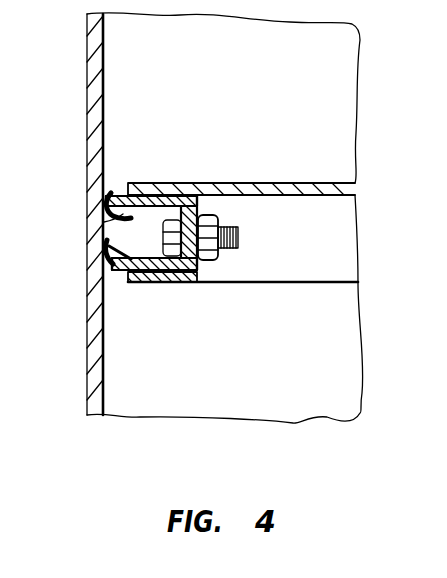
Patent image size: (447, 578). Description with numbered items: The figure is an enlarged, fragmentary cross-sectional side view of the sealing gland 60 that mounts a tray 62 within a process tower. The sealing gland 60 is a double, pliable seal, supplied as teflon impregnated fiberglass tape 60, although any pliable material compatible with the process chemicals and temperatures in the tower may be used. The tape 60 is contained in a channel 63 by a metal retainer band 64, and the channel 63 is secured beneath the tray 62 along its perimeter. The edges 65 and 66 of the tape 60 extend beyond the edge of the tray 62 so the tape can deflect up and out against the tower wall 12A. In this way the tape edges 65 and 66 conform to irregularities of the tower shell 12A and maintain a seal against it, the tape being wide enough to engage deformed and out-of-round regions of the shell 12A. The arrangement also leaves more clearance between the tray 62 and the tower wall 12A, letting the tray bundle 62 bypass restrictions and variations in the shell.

The tower wall 12A is at (97, 91).
The sealing gland 60 is at (108, 228).
The tray 62 is at (242, 184).
The channel 63 is at (124, 189).
The metal retainer band 64 is at (168, 283).
The tape edge 65 is at (106, 222).
The tape edge 66 is at (107, 263).